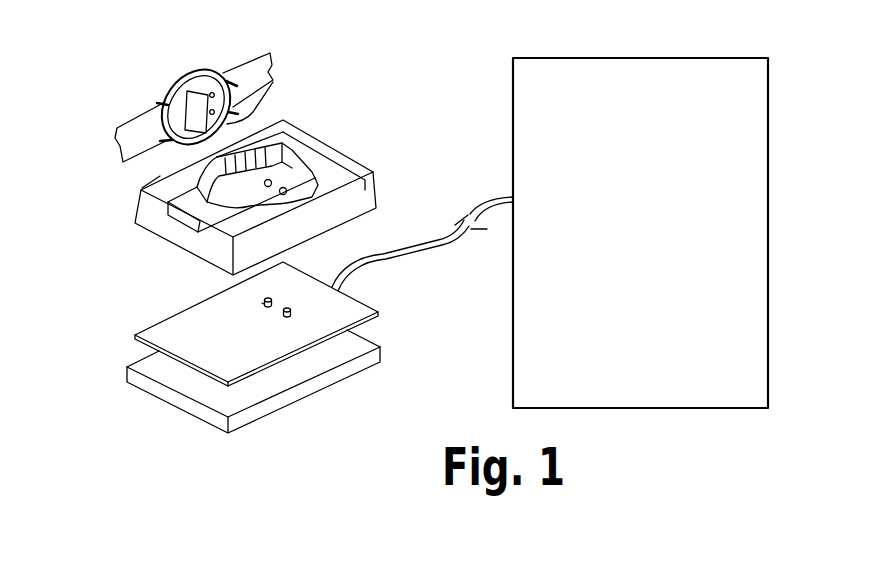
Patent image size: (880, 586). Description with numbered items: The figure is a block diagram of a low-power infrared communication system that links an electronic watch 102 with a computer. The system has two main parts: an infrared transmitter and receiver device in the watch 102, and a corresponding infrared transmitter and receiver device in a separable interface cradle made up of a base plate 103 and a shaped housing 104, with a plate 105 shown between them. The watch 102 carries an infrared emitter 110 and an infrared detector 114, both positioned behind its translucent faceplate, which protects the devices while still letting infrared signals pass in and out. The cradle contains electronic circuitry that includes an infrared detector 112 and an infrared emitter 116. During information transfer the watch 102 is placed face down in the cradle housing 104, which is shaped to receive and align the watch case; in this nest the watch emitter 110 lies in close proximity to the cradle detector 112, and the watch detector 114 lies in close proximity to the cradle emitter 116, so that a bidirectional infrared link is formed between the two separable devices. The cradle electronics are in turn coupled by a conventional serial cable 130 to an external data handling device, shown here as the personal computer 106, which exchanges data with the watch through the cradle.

The electronic watch 102 is at (189, 90).
The base plate 103 is at (163, 372).
The shaped housing 104 is at (284, 133).
The circuit board plate 105 is at (183, 332).
The personal computer 106 is at (640, 60).
The infrared emitter 110 is at (142, 188).
The infrared detector 112 is at (262, 303).
The infrared detector 114 is at (250, 62).
The infrared emitter 116 is at (297, 307).
The serial cable 130 is at (437, 243).